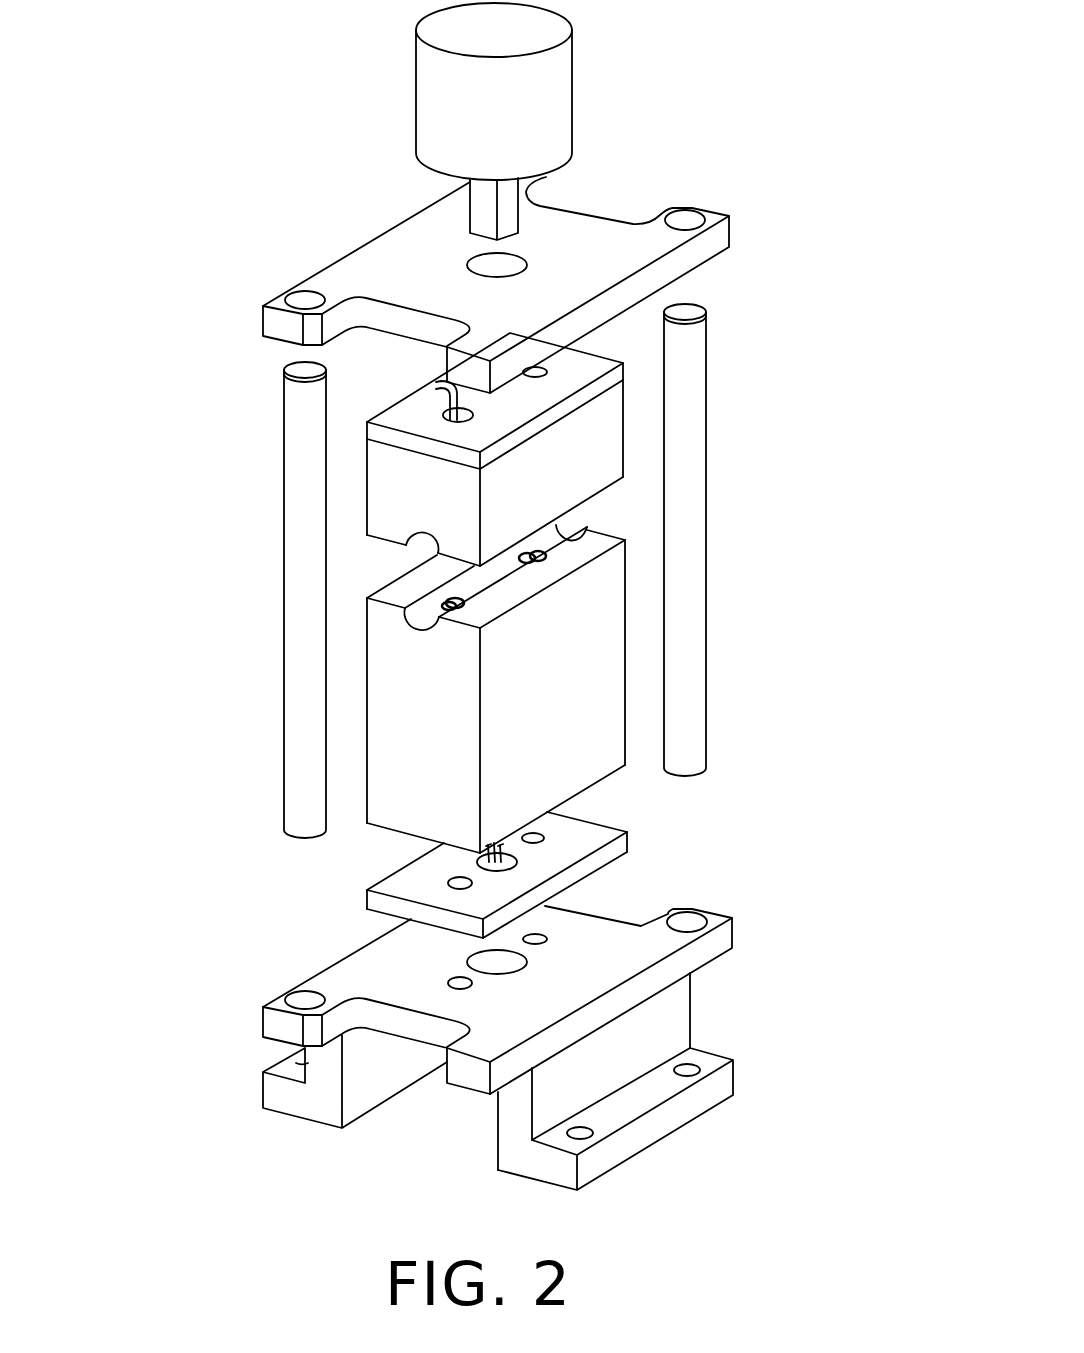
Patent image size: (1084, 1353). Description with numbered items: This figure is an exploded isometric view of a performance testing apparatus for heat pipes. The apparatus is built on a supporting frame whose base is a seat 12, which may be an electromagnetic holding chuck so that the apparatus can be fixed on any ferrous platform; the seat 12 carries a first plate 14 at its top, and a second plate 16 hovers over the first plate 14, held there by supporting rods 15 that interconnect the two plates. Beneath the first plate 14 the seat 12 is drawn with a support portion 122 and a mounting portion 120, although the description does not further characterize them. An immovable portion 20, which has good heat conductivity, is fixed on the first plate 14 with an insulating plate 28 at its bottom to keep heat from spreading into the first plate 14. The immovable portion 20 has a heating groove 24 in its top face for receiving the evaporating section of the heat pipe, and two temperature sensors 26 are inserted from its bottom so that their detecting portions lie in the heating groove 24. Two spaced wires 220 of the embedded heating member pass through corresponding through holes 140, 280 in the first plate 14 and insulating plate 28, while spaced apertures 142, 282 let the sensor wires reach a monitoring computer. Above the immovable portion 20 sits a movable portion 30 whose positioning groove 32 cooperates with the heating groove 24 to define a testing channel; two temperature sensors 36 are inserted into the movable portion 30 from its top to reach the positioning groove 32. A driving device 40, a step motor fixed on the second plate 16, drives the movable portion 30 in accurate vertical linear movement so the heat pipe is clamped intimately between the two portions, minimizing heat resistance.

The driving device 40 is at (550, 89).
The second plate 16 is at (598, 237).
The supporting rods 15 is at (690, 378).
The temperature sensors 36 is at (437, 405).
The movable portion 30 is at (388, 470).
The positioning groove 32 is at (410, 545).
The heating groove 24 is at (422, 612).
The temperature sensors 26 is at (552, 560).
The immovable portion 20 is at (400, 692).
The aperture 282 is at (545, 837).
The insulating plate 28 is at (610, 853).
The through hole 280 is at (478, 858).
The wires 220 is at (520, 852).
The through hole 140 is at (483, 963).
The aperture 142 is at (450, 982).
The first plate 14 is at (640, 947).
The seat 12 is at (647, 1033).
The support leg 122 is at (437, 1102).
The mounting foot 120 is at (610, 1147).